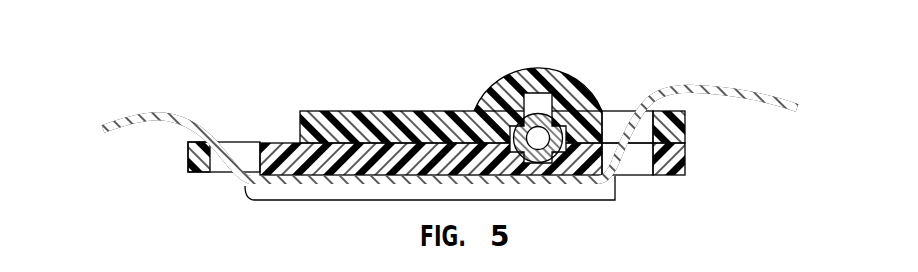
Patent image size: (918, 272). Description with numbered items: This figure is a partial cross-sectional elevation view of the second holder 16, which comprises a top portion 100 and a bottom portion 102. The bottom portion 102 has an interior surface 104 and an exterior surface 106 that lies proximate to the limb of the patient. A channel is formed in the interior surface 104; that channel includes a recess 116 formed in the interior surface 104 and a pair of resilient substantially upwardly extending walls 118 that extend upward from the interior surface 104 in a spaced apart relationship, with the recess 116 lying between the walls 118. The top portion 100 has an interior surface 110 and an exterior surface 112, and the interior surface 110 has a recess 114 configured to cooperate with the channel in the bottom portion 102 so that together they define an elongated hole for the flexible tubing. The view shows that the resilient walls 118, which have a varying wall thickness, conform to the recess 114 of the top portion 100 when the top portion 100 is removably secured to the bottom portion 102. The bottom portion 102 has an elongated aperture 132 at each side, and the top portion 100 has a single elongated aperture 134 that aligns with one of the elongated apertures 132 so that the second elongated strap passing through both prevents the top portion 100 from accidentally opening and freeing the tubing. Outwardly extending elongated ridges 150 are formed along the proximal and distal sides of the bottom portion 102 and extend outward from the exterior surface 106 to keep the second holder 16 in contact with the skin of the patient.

The second holder 16 is at (289, 85).
The top portion 100 is at (685, 123).
The bottom portion 102 is at (685, 165).
The interior surface 104 is at (183, 138).
The exterior surface 106 is at (200, 173).
The interior surface 110 is at (293, 142).
The exterior surface 112 is at (348, 110).
The recess 114 is at (534, 98).
The recess 116 is at (537, 163).
The substantially upwardly extending walls 118 is at (488, 97).
The elongated aperture 132 is at (223, 167).
The elongated aperture 134 is at (622, 118).
The ridge 150 is at (613, 203).